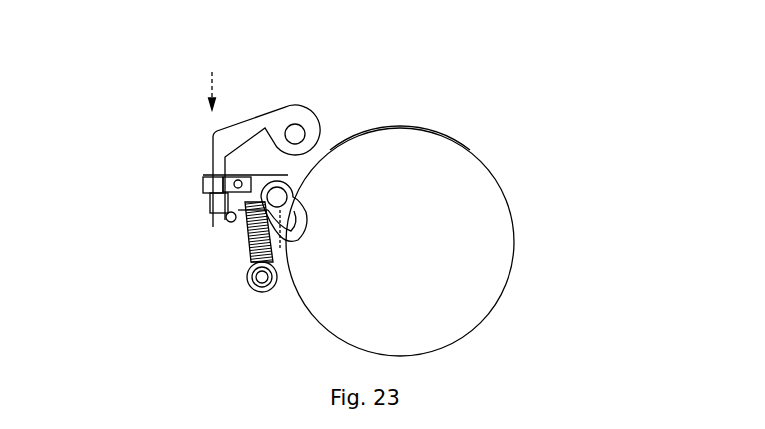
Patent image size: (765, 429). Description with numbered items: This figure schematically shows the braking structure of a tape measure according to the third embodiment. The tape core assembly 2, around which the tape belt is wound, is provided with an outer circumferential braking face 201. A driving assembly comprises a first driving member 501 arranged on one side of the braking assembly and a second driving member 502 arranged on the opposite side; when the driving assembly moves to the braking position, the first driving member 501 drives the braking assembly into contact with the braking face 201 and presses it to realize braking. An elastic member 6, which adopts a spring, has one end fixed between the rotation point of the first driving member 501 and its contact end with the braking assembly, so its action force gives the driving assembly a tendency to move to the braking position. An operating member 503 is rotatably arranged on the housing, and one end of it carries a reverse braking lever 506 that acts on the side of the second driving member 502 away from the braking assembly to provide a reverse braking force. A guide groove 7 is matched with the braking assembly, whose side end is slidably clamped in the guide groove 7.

The tape core assembly 2 is at (472, 225).
The braking face 201 is at (432, 130).
The operating member 503 is at (268, 118).
The first driving member 501 is at (225, 160).
The reverse braking lever 506 is at (208, 190).
The second driving member 502 is at (220, 222).
The elastic member 6 is at (247, 250).
The guide groove 7 is at (285, 205).